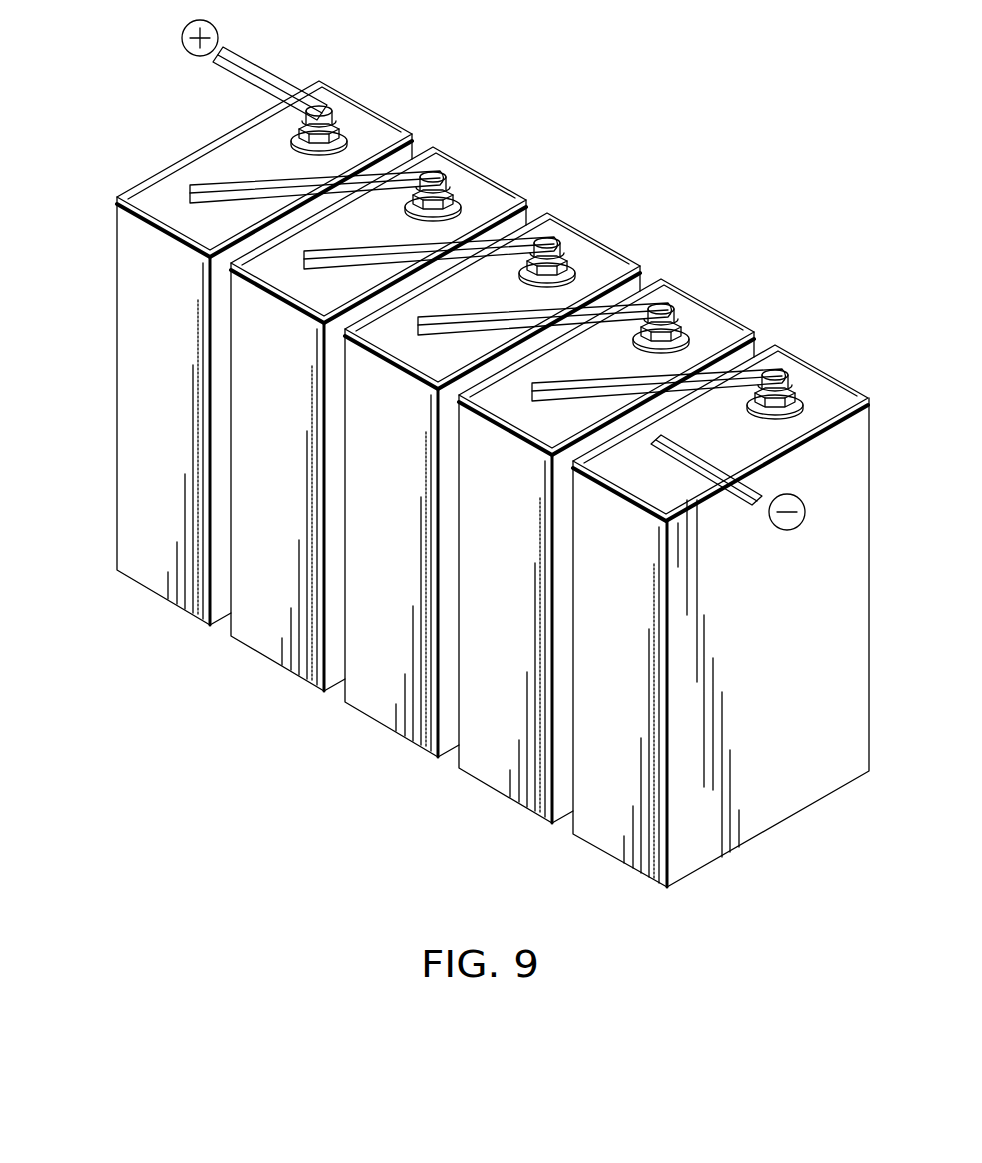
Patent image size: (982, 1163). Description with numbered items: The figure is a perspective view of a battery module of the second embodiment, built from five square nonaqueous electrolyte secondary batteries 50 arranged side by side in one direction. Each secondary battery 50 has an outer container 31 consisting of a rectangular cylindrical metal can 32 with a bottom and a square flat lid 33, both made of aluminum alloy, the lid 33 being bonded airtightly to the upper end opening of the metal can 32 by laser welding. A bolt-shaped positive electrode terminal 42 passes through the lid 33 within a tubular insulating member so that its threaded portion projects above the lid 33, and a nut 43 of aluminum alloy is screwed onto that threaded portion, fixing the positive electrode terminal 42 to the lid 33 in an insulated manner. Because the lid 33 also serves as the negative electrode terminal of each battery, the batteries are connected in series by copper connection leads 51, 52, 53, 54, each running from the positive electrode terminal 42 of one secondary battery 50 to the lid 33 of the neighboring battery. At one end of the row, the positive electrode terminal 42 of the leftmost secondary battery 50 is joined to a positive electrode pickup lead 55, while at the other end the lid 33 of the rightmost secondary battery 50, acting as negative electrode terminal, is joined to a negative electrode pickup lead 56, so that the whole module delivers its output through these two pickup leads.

The outer container 31 is at (450, 484).
The metal can 32 is at (66, 213).
The lid 33 is at (117, 205).
The positive electrode terminal 42 is at (330, 115).
The nut 43 is at (291, 142).
The square nonaqueous electrolyte secondary battery 50 is at (450, 468).
The connection lead 51 is at (408, 172).
The connection lead 52 is at (528, 238).
The connection lead 53 is at (643, 303).
The connection lead 54 is at (757, 369).
The positive electrode pickup lead 55 is at (249, 62).
The negative electrode pickup lead 56 is at (740, 496).